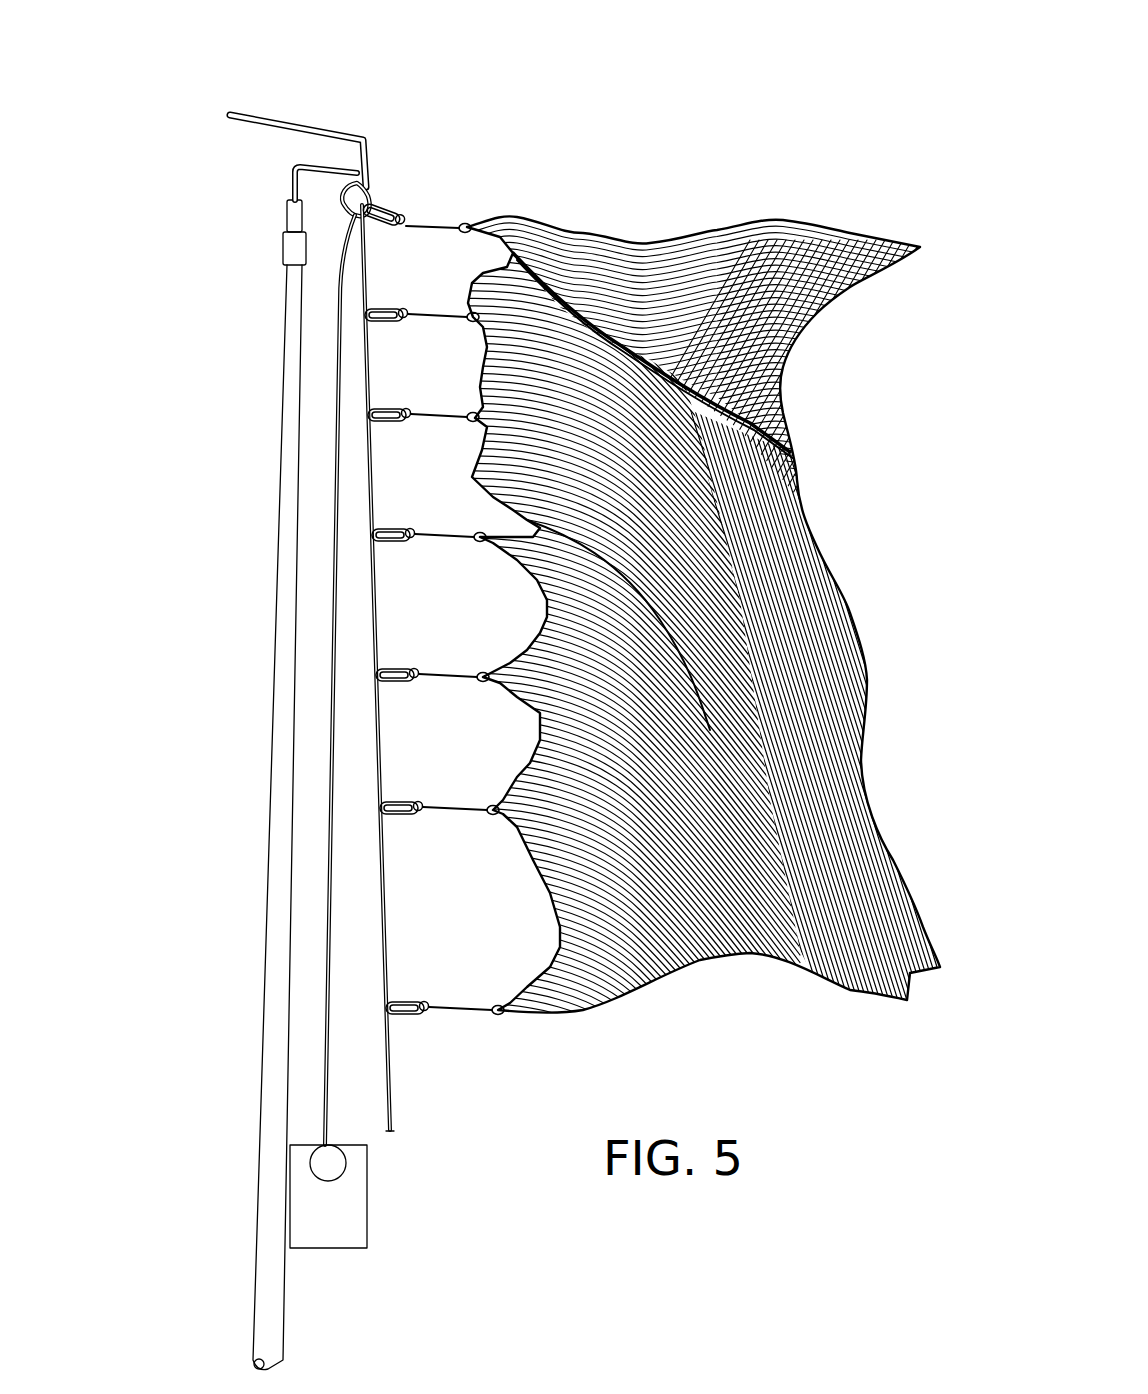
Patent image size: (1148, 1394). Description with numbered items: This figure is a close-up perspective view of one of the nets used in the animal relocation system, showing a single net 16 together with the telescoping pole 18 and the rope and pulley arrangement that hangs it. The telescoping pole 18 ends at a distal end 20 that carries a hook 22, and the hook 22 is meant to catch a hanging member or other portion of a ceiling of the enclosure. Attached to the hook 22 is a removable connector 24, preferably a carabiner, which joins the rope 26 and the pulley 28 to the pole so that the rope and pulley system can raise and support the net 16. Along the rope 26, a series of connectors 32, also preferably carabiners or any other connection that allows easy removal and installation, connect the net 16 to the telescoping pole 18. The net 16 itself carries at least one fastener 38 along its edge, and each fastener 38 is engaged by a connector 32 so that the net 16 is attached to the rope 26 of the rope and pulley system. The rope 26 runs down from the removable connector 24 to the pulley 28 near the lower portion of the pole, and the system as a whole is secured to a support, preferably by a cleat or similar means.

The net 16 is at (660, 243).
The telescoping pole 18 is at (288, 335).
The distal end 20 is at (288, 270).
The hook 22 is at (262, 118).
The removable connector 24 is at (372, 192).
The rope 26 is at (393, 1118).
The pulley 28 is at (345, 1170).
The connector 32 is at (393, 222).
The fastener 38 is at (470, 226).